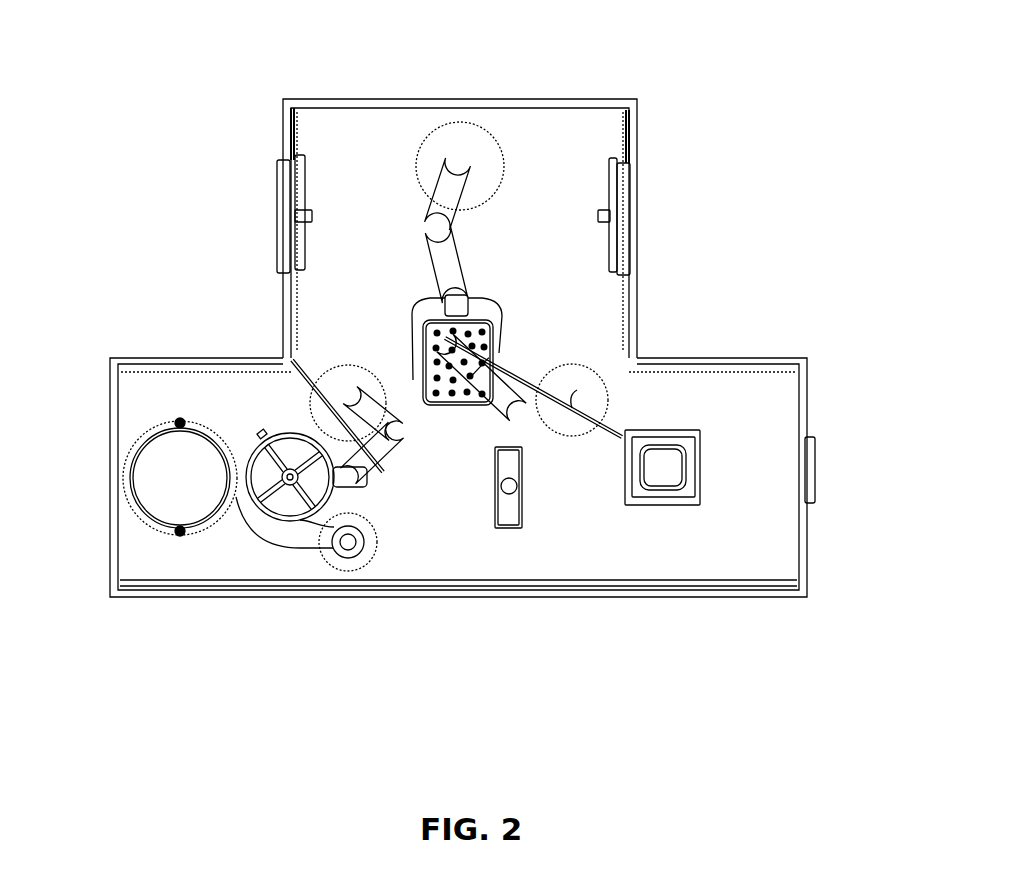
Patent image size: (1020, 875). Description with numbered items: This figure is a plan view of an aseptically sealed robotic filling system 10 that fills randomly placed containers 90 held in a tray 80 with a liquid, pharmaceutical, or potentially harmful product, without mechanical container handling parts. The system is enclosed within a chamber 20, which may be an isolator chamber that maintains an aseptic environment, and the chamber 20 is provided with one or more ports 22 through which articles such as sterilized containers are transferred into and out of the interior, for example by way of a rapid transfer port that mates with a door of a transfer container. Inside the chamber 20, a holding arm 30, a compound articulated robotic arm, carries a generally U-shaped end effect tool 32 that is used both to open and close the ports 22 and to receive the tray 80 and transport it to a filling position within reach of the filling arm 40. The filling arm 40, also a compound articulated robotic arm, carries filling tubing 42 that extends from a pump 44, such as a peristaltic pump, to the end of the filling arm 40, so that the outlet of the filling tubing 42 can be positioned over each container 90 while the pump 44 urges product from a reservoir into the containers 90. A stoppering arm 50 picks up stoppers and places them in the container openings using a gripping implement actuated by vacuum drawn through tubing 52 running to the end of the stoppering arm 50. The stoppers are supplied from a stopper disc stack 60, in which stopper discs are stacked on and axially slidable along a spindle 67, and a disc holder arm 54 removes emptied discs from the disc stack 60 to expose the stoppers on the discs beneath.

The robotic filling system 10 is at (530, 94).
The chamber 20 is at (738, 360).
The port 22 is at (279, 207).
The holding arm 30 is at (443, 263).
The end effect tool 32 is at (503, 318).
The filling arm 40 is at (577, 390).
The filling tubing 42 is at (613, 423).
The pump 44 is at (672, 462).
The stoppering arm 50 is at (400, 430).
The tubing 52 is at (392, 467).
The disc holder arm 54 is at (308, 535).
The stopper disc stack 60 is at (287, 435).
The spindle 67 is at (287, 478).
The tray 80 is at (427, 377).
The container 90 is at (490, 332).